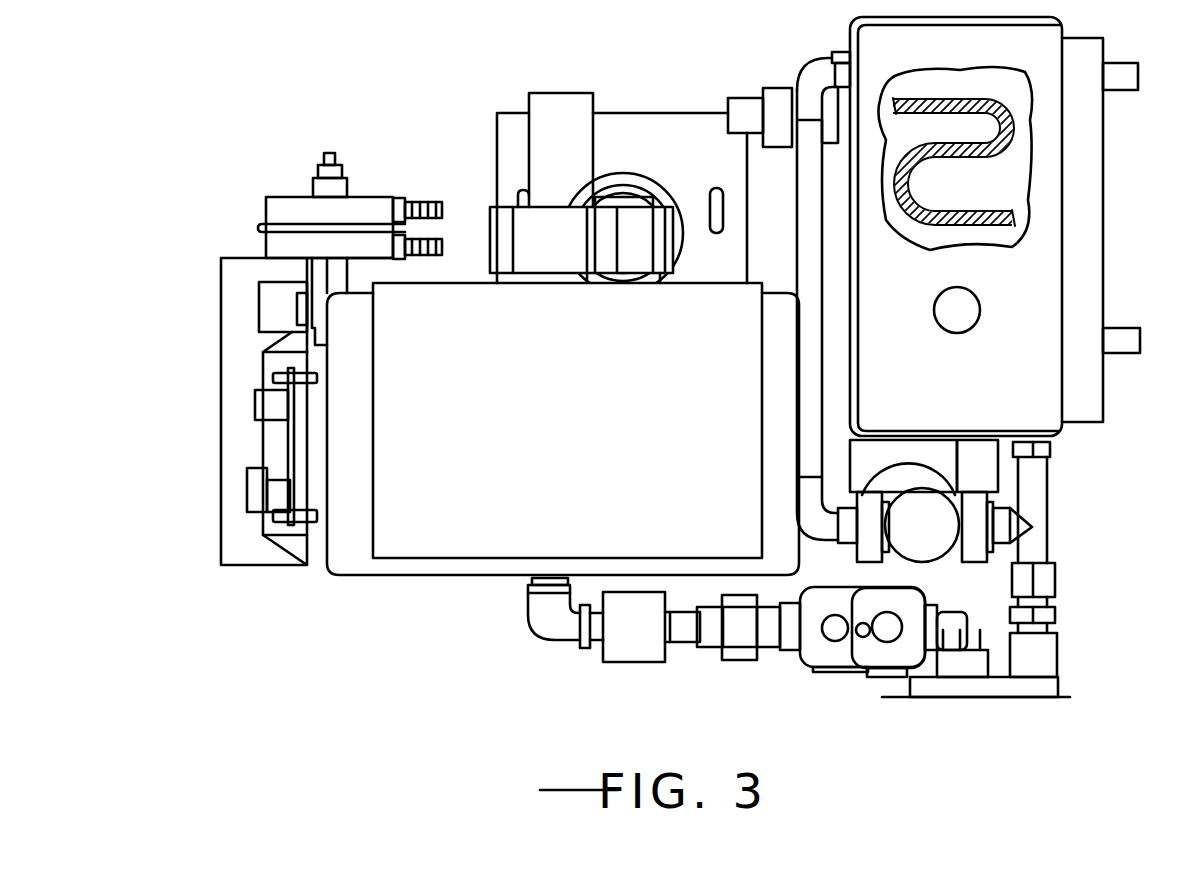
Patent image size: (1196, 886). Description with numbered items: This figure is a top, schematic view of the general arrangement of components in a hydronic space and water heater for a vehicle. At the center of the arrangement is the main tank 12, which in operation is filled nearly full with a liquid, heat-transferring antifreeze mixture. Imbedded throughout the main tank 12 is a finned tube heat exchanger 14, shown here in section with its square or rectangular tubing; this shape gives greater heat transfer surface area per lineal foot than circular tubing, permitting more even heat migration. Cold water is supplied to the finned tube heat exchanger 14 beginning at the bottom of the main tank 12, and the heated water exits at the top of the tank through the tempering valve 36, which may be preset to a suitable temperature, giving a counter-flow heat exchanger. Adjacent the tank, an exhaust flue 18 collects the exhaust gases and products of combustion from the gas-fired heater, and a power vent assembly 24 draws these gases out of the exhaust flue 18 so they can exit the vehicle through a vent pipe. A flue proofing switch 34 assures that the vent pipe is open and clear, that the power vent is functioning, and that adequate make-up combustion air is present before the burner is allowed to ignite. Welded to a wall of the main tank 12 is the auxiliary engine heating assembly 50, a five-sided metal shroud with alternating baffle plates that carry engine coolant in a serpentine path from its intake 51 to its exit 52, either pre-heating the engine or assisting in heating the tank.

The main tank 12 is at (975, 385).
The finned tube heat exchanger 14 is at (1007, 143).
The exhaust flue 18 is at (630, 379).
The power vent assembly 24 is at (571, 103).
The flue proofing switch 34 is at (291, 196).
The tempering valve 36 is at (918, 520).
The auxiliary engine heating assembly 50 is at (1105, 287).
The intake 51 is at (1132, 63).
The exit 52 is at (1118, 355).